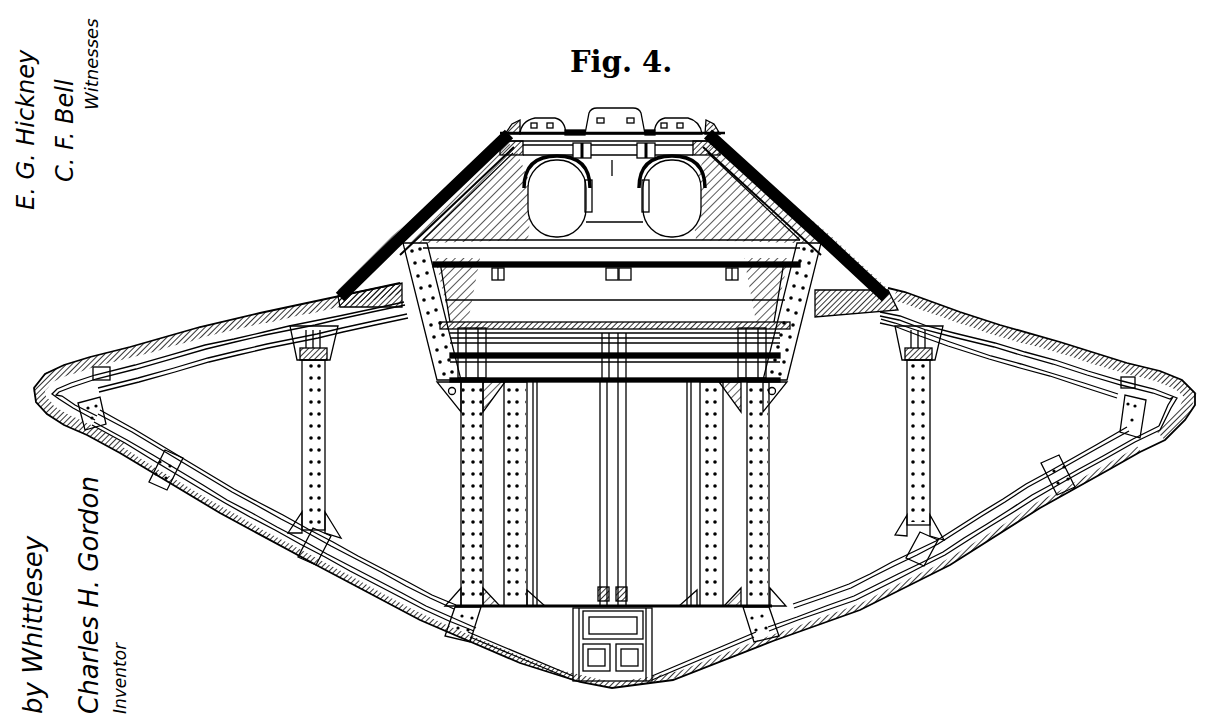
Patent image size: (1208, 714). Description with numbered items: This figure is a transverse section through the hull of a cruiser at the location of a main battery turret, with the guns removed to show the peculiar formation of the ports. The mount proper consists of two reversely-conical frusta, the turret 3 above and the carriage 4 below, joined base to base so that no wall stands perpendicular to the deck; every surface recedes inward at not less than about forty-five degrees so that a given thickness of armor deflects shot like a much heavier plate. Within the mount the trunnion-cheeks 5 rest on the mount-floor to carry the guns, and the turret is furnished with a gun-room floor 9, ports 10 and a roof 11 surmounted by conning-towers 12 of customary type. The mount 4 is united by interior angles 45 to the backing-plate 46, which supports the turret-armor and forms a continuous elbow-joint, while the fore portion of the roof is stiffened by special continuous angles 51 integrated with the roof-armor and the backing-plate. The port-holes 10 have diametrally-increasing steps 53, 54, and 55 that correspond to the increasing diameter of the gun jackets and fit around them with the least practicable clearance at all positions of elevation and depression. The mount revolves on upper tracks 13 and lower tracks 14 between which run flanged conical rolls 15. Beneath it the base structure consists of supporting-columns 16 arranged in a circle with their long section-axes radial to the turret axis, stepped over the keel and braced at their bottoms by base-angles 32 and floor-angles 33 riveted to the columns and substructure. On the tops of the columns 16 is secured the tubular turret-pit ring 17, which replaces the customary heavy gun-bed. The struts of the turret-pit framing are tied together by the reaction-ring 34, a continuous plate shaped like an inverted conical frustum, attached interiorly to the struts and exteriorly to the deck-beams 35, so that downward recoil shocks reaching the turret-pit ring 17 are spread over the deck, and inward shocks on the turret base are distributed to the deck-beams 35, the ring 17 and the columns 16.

The turret 3 is at (476, 165).
The carriage 4 is at (612, 290).
The trunnion-cheeks 5 is at (526, 119).
The gun-room floor 9 is at (580, 268).
The ports 10 is at (800, 153).
The roof 11 is at (656, 133).
The conning-towers 12 is at (615, 112).
The upper tracks 13 is at (497, 330).
The lower tracks 14 is at (513, 350).
The flanged conical rolls 15 is at (437, 366).
The supporting-columns 16 is at (461, 500).
The turret-pit ring 17 is at (615, 355).
The base-angles 32 is at (458, 590).
The floor-angles 33 is at (490, 596).
The reaction-ring 34 is at (413, 335).
The deck-beams 35 is at (355, 315).
The interior angles 45 is at (611, 253).
The backing-plate 46 is at (613, 177).
The special continuous angles 51 is at (584, 157).
The step 53 is at (646, 231).
The step 54 is at (640, 210).
The step 55 is at (534, 172).